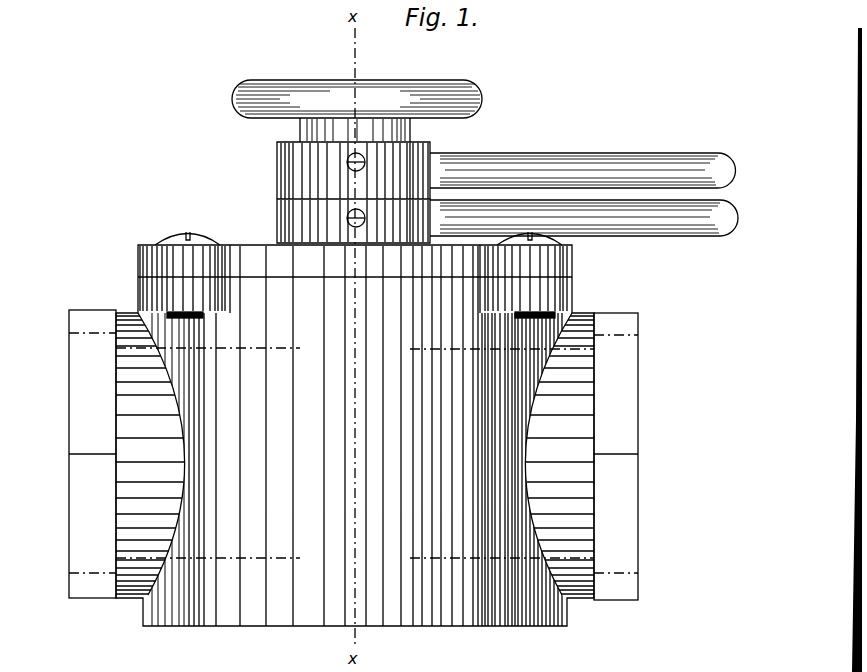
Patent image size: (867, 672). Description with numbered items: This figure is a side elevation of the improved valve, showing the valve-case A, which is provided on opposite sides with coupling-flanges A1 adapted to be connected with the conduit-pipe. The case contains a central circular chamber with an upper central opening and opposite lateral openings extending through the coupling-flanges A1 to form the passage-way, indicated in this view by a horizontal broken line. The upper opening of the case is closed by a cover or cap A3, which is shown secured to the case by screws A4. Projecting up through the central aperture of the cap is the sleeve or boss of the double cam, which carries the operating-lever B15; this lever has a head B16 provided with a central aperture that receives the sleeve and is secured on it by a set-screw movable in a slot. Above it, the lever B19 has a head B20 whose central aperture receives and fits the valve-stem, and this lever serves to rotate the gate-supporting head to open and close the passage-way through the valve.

The valve-case A is at (229, 628).
The coupling-flanges A1 is at (69, 405).
The cover or cap A3 is at (138, 257).
The screws A4 is at (188, 236).
The operating-lever B15 is at (690, 237).
The head B16 is at (276, 219).
The lever B19 is at (634, 153).
The head B20 is at (276, 158).